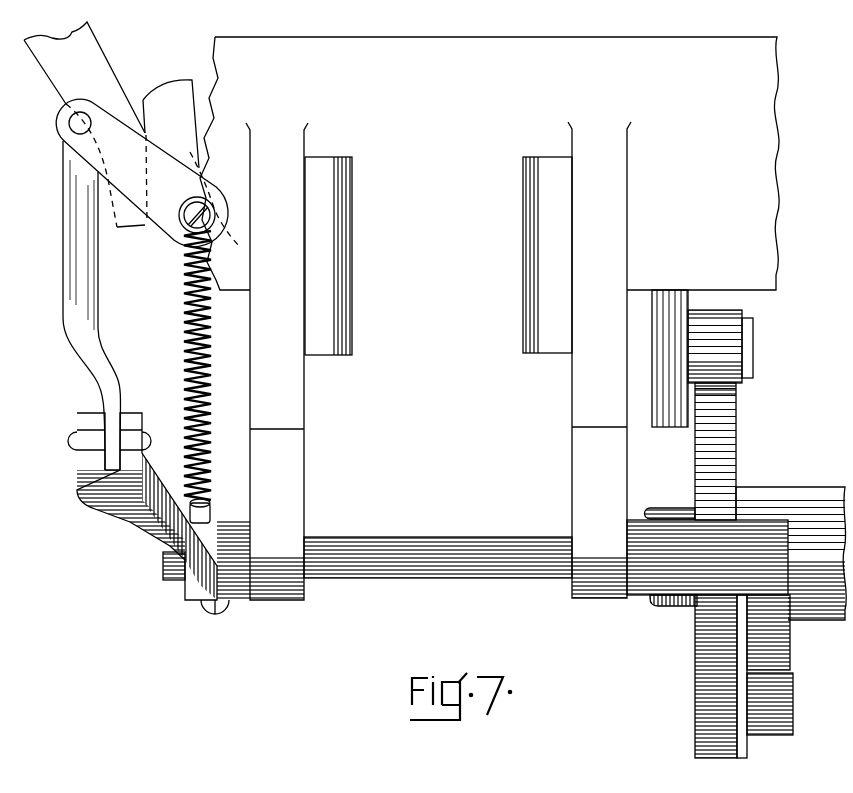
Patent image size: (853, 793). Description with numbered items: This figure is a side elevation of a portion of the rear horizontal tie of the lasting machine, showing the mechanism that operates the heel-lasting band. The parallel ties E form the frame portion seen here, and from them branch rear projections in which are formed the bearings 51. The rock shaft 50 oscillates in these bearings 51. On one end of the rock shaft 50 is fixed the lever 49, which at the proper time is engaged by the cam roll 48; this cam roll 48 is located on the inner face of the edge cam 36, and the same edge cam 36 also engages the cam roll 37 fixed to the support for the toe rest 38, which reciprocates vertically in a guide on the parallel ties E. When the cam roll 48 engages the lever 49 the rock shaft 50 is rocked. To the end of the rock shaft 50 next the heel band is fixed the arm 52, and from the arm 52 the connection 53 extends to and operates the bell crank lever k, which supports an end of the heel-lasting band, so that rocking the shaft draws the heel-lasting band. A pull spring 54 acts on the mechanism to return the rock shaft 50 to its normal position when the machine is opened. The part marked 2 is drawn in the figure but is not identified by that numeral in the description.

The plate 2 is at (670, 502).
The edge cam 36 is at (706, 570).
The cam roll 37 is at (741, 312).
The support for the toe rest 38 is at (670, 358).
The cam roll 48 is at (770, 704).
The lever 49 is at (736, 578).
The rock shaft 50 is at (438, 545).
The bearings 51 is at (438, 361).
The arm 52 is at (159, 513).
The connection 53 is at (96, 305).
The pull spring 54 is at (212, 377).
The parallel ties E is at (489, 196).
The bell crank lever k is at (132, 134).